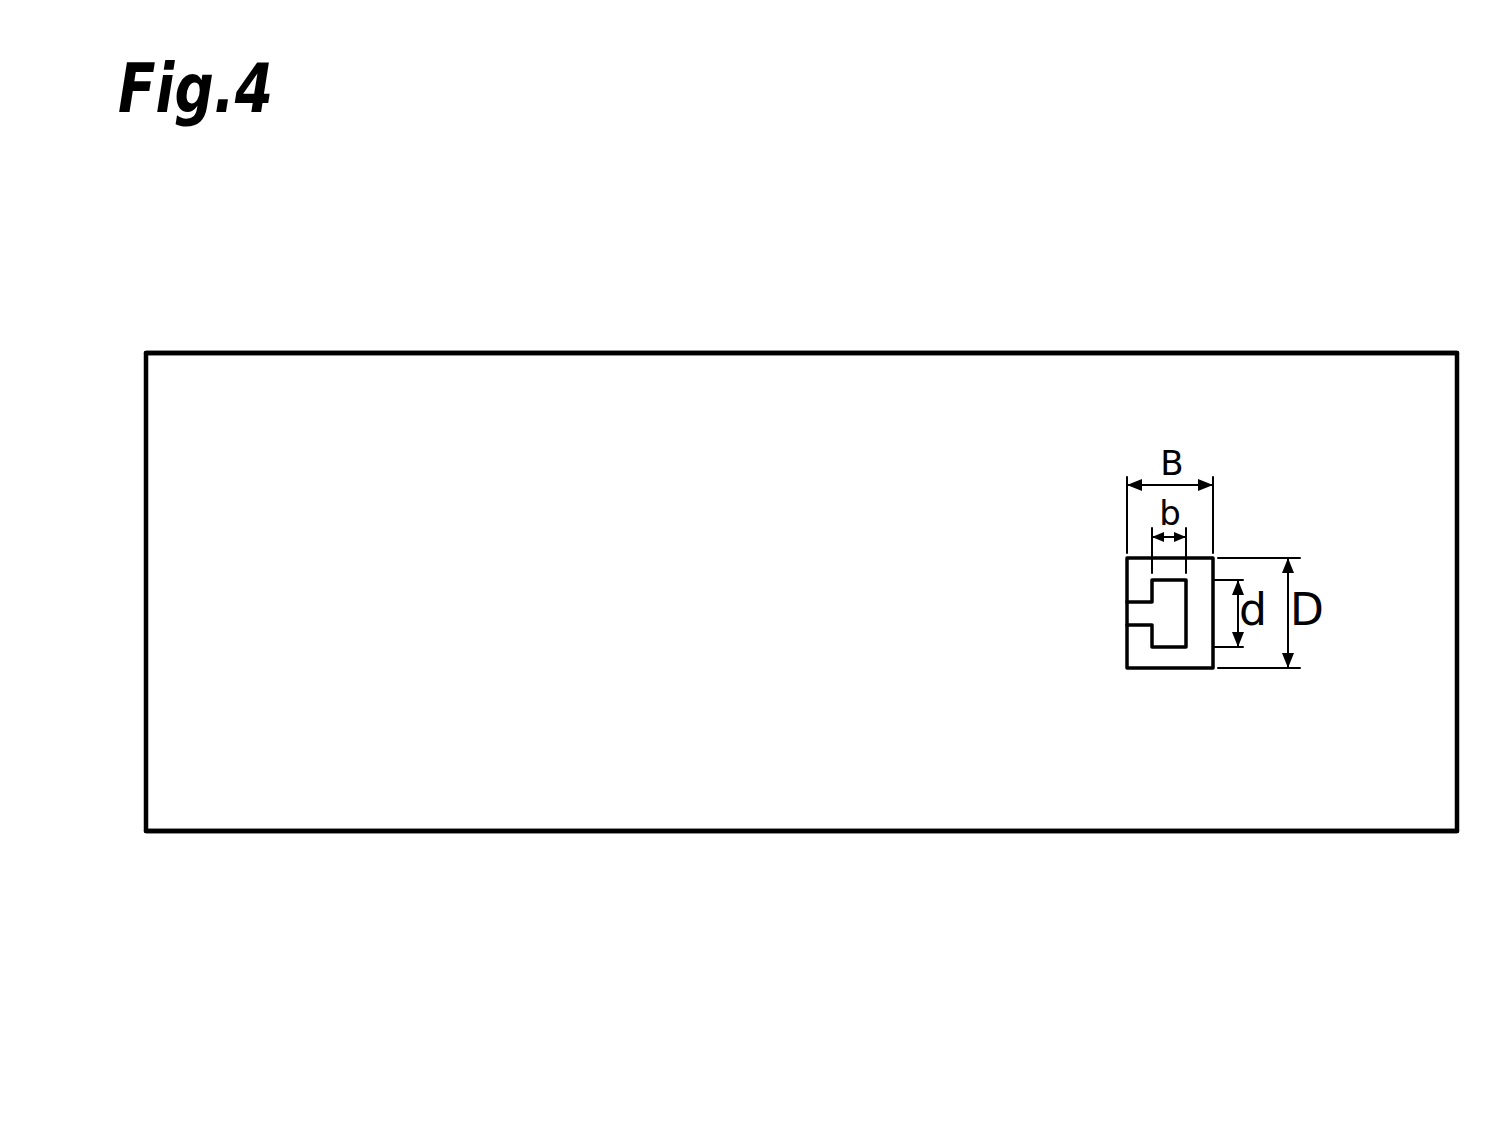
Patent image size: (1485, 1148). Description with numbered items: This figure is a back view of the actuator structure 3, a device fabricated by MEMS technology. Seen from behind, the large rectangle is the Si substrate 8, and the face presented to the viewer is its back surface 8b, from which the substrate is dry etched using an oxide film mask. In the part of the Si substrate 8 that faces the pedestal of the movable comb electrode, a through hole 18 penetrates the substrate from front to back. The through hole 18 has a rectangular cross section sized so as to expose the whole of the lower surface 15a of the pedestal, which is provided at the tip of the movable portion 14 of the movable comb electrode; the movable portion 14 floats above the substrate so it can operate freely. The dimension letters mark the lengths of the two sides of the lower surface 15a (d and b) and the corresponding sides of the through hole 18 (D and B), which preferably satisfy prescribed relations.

The actuator structure 3 is at (604, 240).
The Si substrate 8 is at (962, 353).
The back surface 8b is at (553, 805).
The movable portion 14 is at (1140, 613).
The lower surface 15a is at (1165, 595).
The through hole 18 is at (1172, 658).